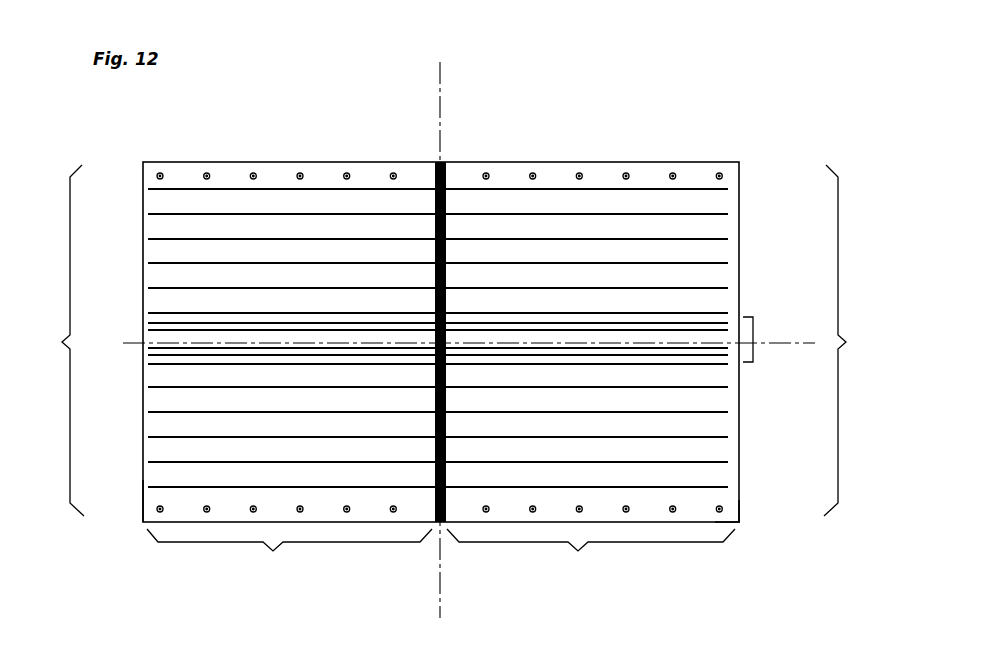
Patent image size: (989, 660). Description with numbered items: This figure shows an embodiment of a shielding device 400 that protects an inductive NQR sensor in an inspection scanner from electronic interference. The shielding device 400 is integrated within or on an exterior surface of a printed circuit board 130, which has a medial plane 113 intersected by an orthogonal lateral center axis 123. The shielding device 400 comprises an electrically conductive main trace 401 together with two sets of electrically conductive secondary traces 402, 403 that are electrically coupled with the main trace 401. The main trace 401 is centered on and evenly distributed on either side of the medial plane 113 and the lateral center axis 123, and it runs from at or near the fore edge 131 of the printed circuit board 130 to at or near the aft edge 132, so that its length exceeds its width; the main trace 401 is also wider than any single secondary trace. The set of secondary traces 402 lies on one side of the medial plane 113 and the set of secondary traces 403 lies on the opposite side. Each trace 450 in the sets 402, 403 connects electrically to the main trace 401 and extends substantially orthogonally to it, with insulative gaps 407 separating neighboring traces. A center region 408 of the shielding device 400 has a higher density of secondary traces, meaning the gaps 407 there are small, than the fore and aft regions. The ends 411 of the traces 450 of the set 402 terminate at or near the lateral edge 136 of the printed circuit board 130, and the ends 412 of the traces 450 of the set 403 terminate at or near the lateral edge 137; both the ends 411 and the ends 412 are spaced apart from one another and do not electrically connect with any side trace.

The shielding device 400 is at (694, 139).
The medial plane 113 is at (440, 93).
The lateral center axis 123 is at (132, 341).
The main trace 401 is at (446, 194).
The trace 450 is at (157, 239).
The printed circuit board 130 is at (228, 175).
The fore edge 131 is at (323, 175).
The aft edge 132 is at (150, 510).
The lateral edge 136 is at (137, 487).
The lateral edge 137 is at (753, 523).
The set of secondary traces 402 is at (120, 430).
The set of secondary traces 403 is at (591, 551).
The insulative gaps 407 is at (713, 452).
The center region 408 is at (753, 333).
The ends 411 is at (57, 340).
The ends 412 is at (855, 340).